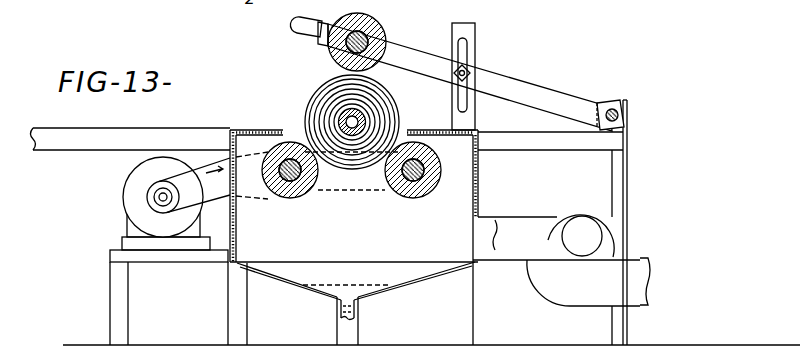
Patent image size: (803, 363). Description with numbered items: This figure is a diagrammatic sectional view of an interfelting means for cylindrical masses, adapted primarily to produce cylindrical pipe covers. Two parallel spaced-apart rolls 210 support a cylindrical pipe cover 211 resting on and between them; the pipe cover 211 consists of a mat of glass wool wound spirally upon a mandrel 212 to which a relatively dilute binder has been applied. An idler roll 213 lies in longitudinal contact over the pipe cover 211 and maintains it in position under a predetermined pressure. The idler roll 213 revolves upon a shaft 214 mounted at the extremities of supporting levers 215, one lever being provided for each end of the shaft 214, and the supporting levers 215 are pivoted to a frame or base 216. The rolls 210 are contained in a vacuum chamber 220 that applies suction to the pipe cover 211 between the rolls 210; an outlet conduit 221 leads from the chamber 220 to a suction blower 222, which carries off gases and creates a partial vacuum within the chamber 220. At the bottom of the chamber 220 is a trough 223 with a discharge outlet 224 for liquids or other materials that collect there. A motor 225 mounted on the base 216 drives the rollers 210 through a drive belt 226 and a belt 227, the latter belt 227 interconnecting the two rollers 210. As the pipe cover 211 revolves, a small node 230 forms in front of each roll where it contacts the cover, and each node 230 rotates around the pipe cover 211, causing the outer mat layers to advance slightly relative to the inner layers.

The rolls 210 is at (290, 198).
The cylindrical pipe cover 211 is at (304, 114).
The mandrel 212 is at (342, 114).
The idler roll 213 is at (373, 31).
The shaft 214 is at (368, 28).
The supporting levers 215 is at (503, 77).
The frame or base 216 is at (103, 142).
The vacuum chamber 220 is at (392, 251).
The outlet conduit 221 is at (487, 262).
The suction blower 222 is at (548, 295).
The trough 223 is at (387, 282).
The discharge outlet 224 is at (352, 313).
The motor 225 is at (128, 197).
The drive belt 226 is at (210, 167).
The belt 227 is at (347, 191).
The node 230 is at (363, 73).